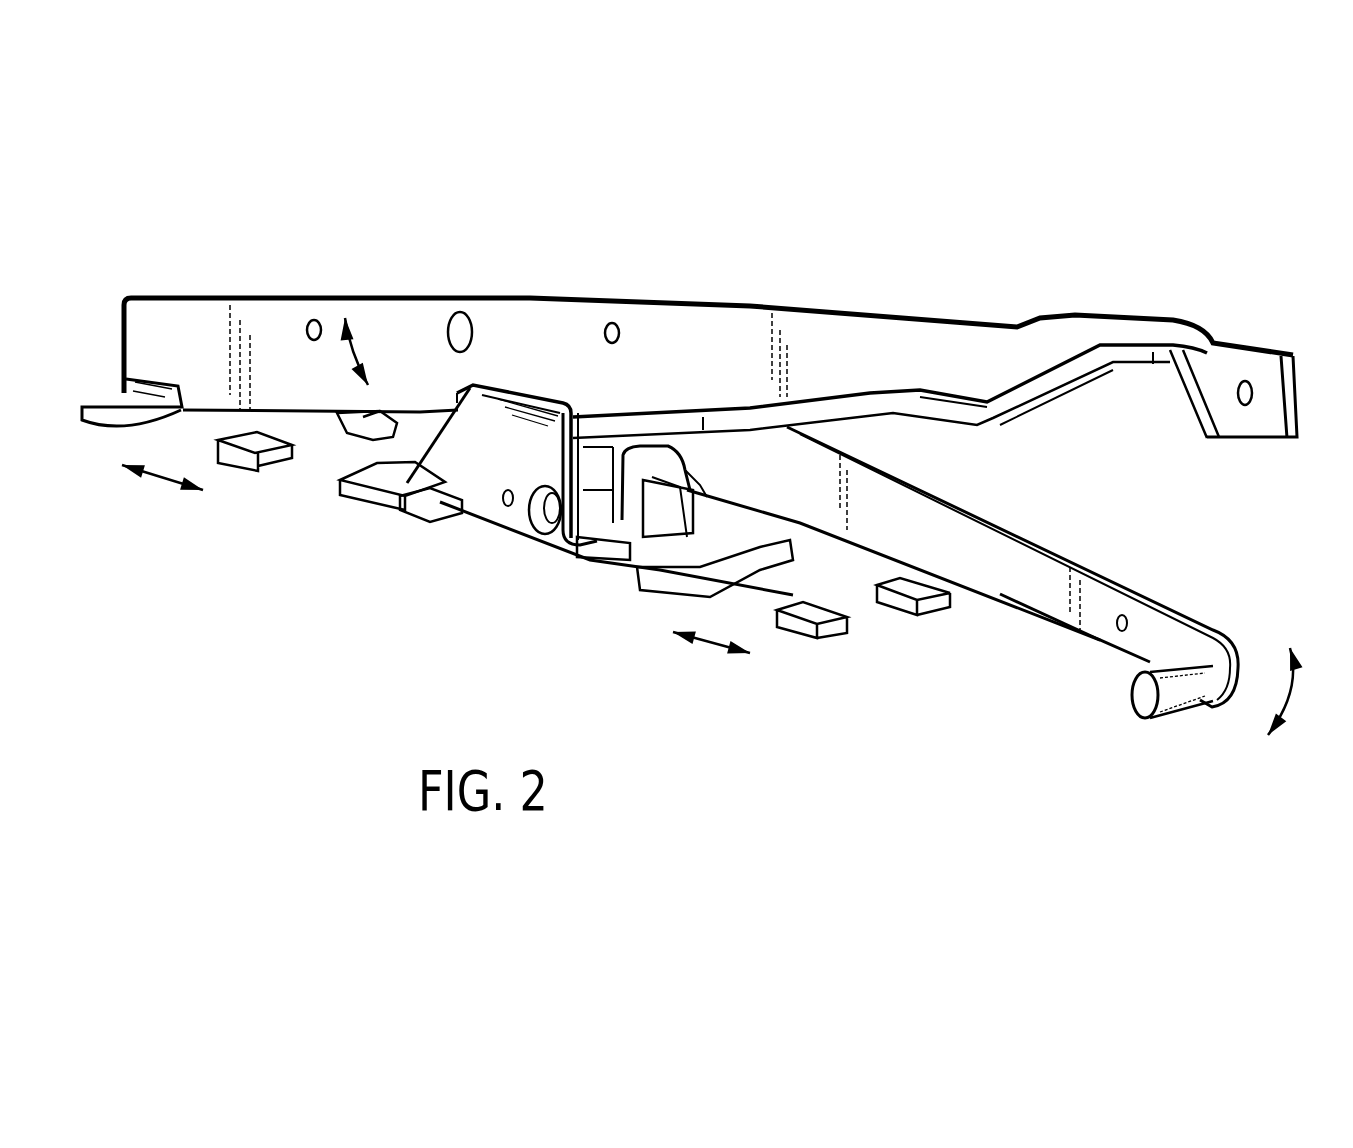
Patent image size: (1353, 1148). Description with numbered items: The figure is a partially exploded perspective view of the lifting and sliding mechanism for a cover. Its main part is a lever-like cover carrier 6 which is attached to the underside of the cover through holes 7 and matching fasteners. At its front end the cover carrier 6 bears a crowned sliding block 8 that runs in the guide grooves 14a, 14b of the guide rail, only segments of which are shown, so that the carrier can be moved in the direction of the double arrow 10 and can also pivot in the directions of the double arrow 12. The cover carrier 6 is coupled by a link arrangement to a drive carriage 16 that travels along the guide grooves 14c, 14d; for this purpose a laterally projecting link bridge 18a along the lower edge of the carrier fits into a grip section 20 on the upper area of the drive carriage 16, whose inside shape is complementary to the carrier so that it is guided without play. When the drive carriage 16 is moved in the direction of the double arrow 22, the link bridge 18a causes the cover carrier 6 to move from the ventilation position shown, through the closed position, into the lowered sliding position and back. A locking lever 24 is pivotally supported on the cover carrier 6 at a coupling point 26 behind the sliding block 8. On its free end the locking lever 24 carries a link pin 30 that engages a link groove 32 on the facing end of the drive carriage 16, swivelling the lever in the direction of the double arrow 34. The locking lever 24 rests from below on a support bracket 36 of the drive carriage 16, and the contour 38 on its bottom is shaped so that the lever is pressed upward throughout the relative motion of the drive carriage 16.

The cover carrier 6 is at (895, 350).
The holes 7 is at (310, 334).
The sliding block 8 is at (113, 398).
The double arrow 10 is at (163, 480).
The double arrow 12 is at (362, 340).
The guide groove 14a is at (262, 472).
The guide groove 14b is at (343, 440).
The guide groove 14c is at (827, 640).
The guide groove 14d is at (933, 617).
The drive carriage 16 is at (473, 542).
The link bridge 18a is at (745, 413).
The grip section 20 is at (591, 408).
The double arrow 22 is at (710, 640).
The locking lever 24 is at (1043, 577).
The coupling point 26 is at (452, 320).
The link pin 30 is at (1190, 705).
The link groove 32 is at (697, 482).
The double arrow 34 is at (1295, 700).
The support bracket 36 is at (603, 540).
The contour 38 is at (1044, 632).